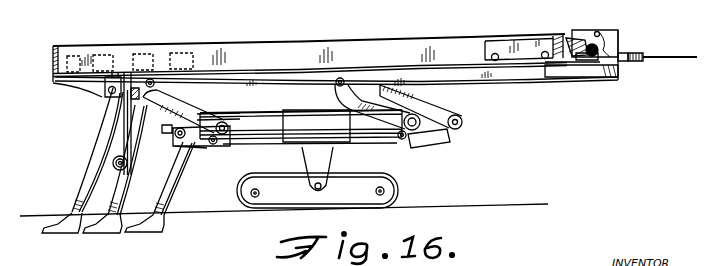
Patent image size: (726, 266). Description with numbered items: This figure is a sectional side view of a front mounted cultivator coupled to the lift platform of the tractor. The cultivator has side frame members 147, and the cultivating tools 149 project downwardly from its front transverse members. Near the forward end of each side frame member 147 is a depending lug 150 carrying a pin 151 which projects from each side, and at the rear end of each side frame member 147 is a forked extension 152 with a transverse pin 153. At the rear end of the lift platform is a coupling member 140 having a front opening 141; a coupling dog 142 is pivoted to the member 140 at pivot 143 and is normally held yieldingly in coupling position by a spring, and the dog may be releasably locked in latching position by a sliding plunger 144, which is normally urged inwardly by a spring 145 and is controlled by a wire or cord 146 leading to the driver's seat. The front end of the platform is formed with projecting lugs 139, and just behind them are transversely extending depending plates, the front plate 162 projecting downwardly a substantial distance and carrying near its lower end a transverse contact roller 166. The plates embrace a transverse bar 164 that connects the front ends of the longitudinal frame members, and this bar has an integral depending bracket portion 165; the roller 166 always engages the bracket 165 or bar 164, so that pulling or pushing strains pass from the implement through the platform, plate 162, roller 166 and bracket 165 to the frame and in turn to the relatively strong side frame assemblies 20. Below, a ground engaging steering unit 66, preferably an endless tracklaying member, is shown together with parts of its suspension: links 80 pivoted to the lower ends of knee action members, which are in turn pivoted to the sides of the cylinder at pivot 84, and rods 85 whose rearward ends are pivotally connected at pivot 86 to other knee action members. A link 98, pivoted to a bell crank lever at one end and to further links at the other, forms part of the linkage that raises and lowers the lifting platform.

The side frame assembly 20 is at (500, 86).
The ground engaging steering unit 66 is at (398, 186).
The link 80 is at (181, 146).
The pivot 84 is at (229, 90).
The rod 85 is at (255, 144).
The pivot 86 is at (402, 140).
The link 98 is at (438, 102).
The projecting lug 139 is at (124, 78).
The coupling member 140 is at (612, 33).
The front opening 141 is at (590, 61).
The coupling dog 142 is at (572, 41).
The pivot 143 is at (598, 31).
The sliding plunger 144 is at (623, 53).
The spring 145 is at (641, 53).
The wire or cord 146 is at (676, 57).
The side frame member 147 is at (244, 52).
The cultivating tool 149 is at (83, 193).
The depending lug 150 is at (107, 93).
The pin 151 is at (110, 102).
The forked extension 152 is at (580, 69).
The transverse pin 153 is at (595, 57).
The front plate 162 is at (112, 140).
The transverse bar 164 is at (130, 75).
The bracket portion 165 is at (138, 143).
The contact roller 166 is at (119, 171).